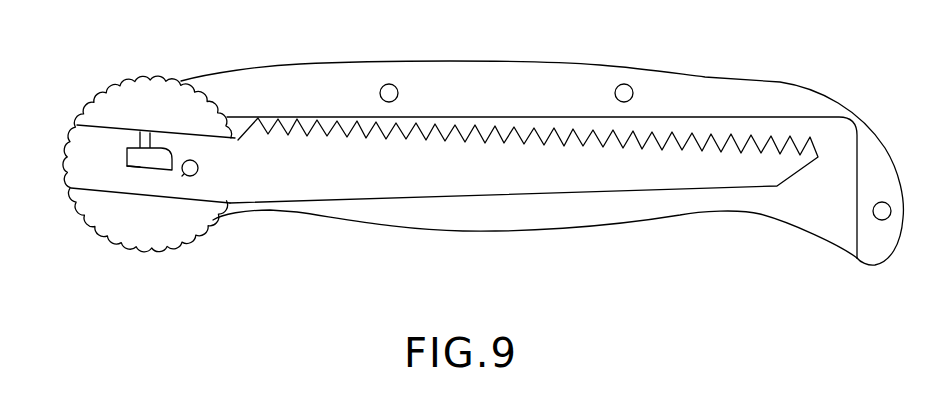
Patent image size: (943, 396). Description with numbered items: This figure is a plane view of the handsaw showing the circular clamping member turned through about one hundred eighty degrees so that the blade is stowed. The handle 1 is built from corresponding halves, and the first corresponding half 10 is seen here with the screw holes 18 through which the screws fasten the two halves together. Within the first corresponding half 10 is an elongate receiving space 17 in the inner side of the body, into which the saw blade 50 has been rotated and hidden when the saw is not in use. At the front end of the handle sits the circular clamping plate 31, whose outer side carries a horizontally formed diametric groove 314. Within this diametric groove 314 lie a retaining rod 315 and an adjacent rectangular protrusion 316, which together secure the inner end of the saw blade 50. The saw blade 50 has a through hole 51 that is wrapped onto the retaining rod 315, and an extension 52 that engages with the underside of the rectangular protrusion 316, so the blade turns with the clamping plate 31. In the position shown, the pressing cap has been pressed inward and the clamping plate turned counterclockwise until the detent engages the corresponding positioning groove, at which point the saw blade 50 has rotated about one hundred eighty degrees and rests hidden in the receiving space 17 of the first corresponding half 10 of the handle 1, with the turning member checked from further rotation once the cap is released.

The handle 1 is at (803, 62).
The first corresponding half 10 is at (705, 77).
The receiving space 17 is at (638, 207).
The screw holes 18 is at (624, 93).
The circular clamping plate 31 is at (117, 95).
The diametric groove 314 is at (97, 170).
The retaining rod 315 is at (182, 176).
The rectangular protrusion 316 is at (128, 166).
The saw blade 50 is at (448, 192).
The through hole 51 is at (193, 176).
The extension 52 is at (151, 138).